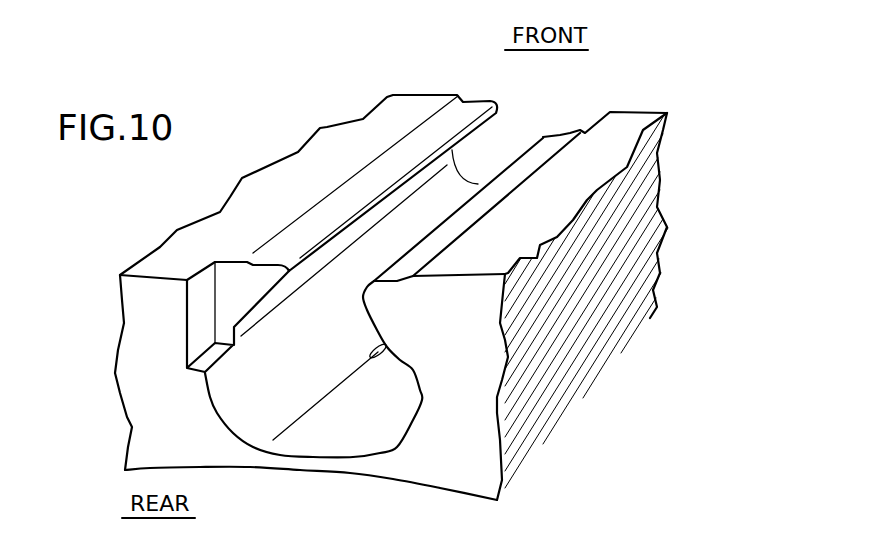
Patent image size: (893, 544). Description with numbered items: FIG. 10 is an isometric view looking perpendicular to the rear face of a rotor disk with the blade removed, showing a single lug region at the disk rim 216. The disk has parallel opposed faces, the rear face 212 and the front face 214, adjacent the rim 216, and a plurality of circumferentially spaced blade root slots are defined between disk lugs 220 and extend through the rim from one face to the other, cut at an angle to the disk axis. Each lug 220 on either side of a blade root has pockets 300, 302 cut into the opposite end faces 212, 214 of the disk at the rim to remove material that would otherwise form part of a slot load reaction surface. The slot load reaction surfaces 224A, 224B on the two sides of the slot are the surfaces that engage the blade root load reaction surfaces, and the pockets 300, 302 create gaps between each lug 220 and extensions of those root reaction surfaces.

The rear face 212 is at (158, 445).
The front face 214 is at (437, 96).
The rim 216 is at (304, 170).
The disk lug 220 is at (470, 109).
The slot load reaction surface 224A is at (290, 286).
The slot load reaction surface 224B is at (389, 356).
The pocket 300 is at (218, 268).
The pocket 302 is at (583, 130).